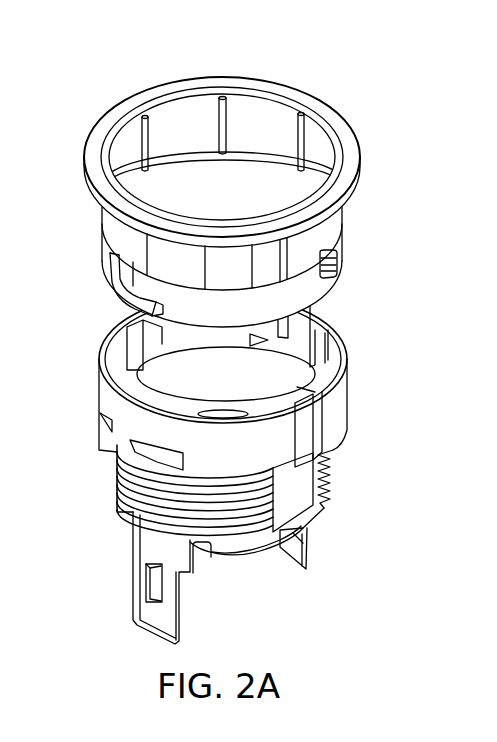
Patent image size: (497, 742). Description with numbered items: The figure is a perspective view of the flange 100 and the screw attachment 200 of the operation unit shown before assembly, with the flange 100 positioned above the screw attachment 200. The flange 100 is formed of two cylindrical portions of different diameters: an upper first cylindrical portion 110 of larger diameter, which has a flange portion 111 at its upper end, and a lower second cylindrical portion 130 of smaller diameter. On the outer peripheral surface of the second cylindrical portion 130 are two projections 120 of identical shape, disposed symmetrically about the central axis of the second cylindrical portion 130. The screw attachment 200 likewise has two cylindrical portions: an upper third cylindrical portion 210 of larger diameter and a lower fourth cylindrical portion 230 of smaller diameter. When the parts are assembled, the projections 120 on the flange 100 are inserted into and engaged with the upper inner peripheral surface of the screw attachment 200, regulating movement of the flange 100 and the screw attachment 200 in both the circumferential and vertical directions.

The flange 100 is at (310, 50).
The first cylindrical portion 110 is at (337, 223).
The flange portion 111 is at (333, 120).
The projection 120 is at (327, 272).
The second cylindrical portion 130 is at (300, 290).
The screw attachment 200 is at (352, 469).
The third cylindrical portion 210 is at (332, 403).
The fourth cylindrical portion 230 is at (307, 518).